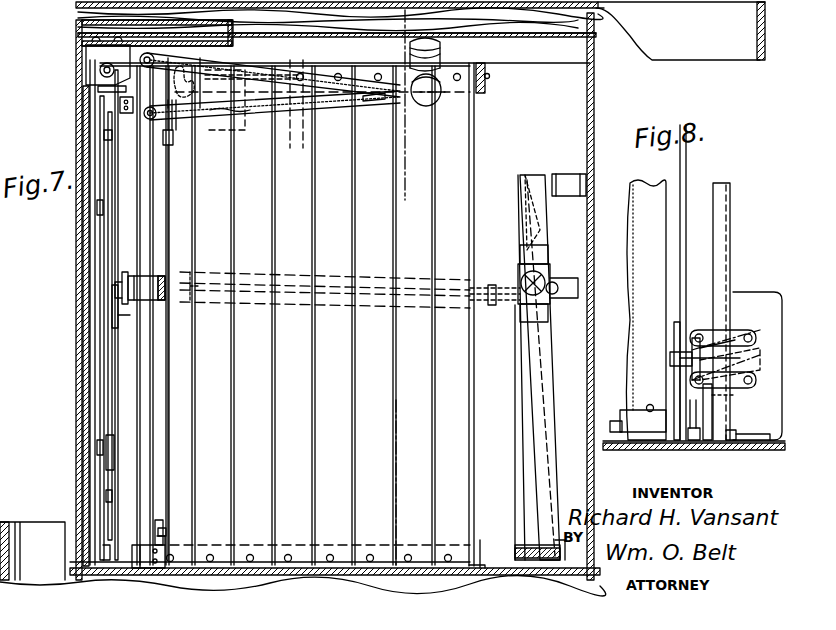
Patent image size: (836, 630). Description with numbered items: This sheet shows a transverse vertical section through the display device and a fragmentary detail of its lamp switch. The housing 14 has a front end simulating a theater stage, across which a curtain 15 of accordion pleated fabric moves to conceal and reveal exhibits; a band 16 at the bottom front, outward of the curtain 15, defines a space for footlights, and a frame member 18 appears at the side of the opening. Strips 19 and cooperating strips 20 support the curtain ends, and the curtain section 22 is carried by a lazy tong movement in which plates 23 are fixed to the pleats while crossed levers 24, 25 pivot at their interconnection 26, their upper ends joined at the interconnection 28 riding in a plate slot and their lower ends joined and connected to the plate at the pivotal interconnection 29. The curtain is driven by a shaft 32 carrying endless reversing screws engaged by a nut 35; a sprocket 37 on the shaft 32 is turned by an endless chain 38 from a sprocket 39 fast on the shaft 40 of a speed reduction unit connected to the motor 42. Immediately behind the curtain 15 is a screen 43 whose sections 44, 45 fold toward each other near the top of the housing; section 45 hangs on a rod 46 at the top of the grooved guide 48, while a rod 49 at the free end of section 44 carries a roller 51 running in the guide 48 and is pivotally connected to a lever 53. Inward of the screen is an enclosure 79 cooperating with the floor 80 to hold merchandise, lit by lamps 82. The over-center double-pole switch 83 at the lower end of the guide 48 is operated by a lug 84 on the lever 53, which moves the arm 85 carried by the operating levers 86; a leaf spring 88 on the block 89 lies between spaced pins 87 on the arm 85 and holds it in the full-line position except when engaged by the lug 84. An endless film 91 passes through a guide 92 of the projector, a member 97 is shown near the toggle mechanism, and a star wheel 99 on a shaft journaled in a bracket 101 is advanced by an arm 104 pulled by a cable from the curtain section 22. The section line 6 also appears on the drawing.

In FIG. 7, the section line 6 is at (397, 46).
In FIG. 7, the housing 14 is at (595, 104).
In FIG. 7, the curtain 15 is at (84, 311).
In FIG. 7, the band 16 is at (32, 520).
In FIG. 7, the side frame 18 is at (75, 389).
In FIG. 7, the strips 19 is at (98, 236).
In FIG. 7, the strips 20 is at (108, 250).
In FIG. 7, the curtain section 22 is at (82, 364).
In FIG. 7, the plates 23 is at (96, 208).
In FIG. 7, the lever 24 is at (118, 182).
In FIG. 7, the lever 25 is at (107, 163).
In FIG. 7, the pivotal interconnection 26 is at (103, 135).
In FIG. 7, the interconnection 28 is at (108, 436).
In FIG. 7, the pivotal interconnection 29 is at (98, 98).
In FIG. 7, the shaft 32 is at (100, 70).
In FIG. 7, the nut 35 is at (127, 115).
In FIG. 7, the sprocket 37 is at (90, 52).
In FIG. 7, the endless chain 38 is at (96, 88).
In FIG. 7, the sprocket 39 is at (186, 95).
In FIG. 7, the shaft 40 is at (220, 120).
In FIG. 7, the motor 42 is at (222, 88).
In FIG. 7, the screen 43 is at (335, 104).
In FIG. 8, the screen 43 is at (640, 366).
In FIG. 7, the screen section 44 is at (300, 110).
In FIG. 7, the screen section 45 is at (320, 78).
In FIG. 7, the rod 46 is at (140, 56).
In FIG. 7, the grooved guide 48 is at (150, 240).
In FIG. 8, the grooved guide 48 is at (728, 222).
In FIG. 7, the rod 49 is at (168, 120).
In FIG. 8, the rod 49 is at (693, 442).
In FIG. 8, the roller 51 is at (708, 442).
In FIG. 8, the lever 53 is at (680, 224).
In FIG. 7, the enclosure 79 is at (462, 150).
In FIG. 8, the floor 80 is at (646, 448).
In FIG. 7, the lamps 82 is at (424, 104).
In FIG. 7, the over-center double-pole switch 83 is at (160, 516).
In FIG. 8, the over-center double-pole switch 83 is at (758, 292).
In FIG. 7, the lug 84 is at (172, 148).
In FIG. 8, the lug 84 is at (672, 340).
In FIG. 8, the arm 85 is at (670, 360).
In FIG. 8, the operating levers 86 is at (716, 336).
In FIG. 8, the pins 87 is at (694, 338).
In FIG. 8, the leaf spring 88 is at (738, 364).
In FIG. 8, the block 89 is at (770, 380).
In FIG. 7, the endless film 91 is at (552, 236).
In FIG. 7, the guide 92 is at (548, 270).
In FIG. 7, the bar 97 is at (485, 285).
In FIG. 7, the star wheel 99 is at (124, 270).
In FIG. 7, the bracket 101 is at (168, 276).
In FIG. 7, the arm 104 is at (122, 318).